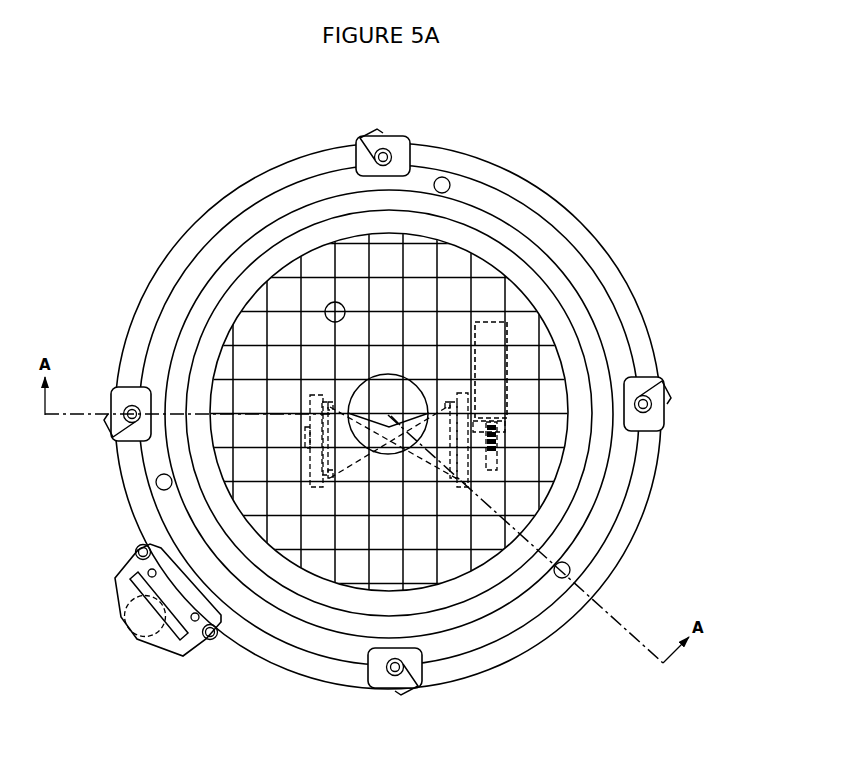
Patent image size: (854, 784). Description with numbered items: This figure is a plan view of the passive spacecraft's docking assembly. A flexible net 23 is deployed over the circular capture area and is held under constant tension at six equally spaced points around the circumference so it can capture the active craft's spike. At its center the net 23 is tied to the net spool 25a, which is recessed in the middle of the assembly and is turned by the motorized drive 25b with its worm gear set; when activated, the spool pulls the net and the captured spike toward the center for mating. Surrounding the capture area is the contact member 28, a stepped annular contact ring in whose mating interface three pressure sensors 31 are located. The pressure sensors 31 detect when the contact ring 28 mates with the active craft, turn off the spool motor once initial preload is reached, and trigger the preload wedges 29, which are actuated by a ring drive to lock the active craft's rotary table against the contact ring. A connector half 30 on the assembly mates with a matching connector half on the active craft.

The flexible net 23 is at (330, 306).
The net spool 25a is at (350, 448).
The motorized drive 25b is at (503, 364).
The contact member 28 is at (553, 270).
The preload wedges 29 is at (397, 690).
The connector half 30 is at (136, 623).
The pressure sensors 31 is at (564, 582).